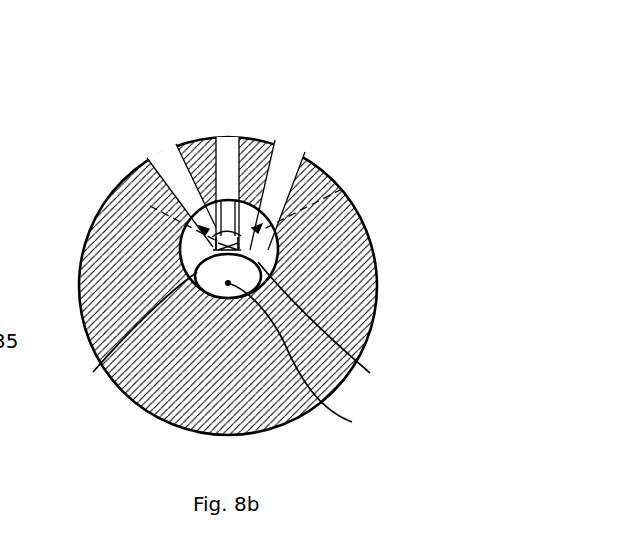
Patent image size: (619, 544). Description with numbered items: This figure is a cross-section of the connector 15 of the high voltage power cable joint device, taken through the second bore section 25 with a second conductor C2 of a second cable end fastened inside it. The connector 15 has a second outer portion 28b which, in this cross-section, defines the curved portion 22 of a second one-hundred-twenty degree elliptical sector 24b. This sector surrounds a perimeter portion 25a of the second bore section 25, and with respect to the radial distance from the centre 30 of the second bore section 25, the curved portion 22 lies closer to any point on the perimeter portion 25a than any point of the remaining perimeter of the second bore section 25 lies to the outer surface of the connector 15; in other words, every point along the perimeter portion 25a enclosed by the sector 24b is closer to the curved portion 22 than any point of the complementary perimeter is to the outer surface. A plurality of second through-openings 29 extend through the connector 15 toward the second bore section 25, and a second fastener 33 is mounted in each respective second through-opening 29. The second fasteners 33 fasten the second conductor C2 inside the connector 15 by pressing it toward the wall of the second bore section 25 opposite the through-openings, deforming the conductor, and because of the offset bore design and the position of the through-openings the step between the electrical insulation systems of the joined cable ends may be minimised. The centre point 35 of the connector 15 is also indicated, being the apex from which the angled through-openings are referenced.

The connector 15 is at (339, 77).
The curved portion 22 is at (255, 142).
The second 120 degree elliptical sector 24b is at (138, 203).
The second bore section 25 is at (272, 257).
The perimeter portion 25a is at (153, 167).
The second outer portion 28b is at (322, 160).
The second through-opening 29 is at (183, 152).
The centre of the second bore section 30 is at (330, 327).
The second fastener 33 is at (150, 150).
The centre point of the connector 35 is at (304, 359).
The second conductor C2 is at (129, 332).